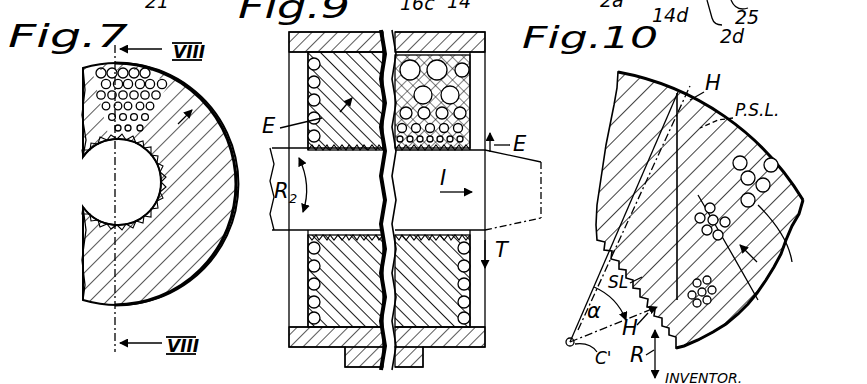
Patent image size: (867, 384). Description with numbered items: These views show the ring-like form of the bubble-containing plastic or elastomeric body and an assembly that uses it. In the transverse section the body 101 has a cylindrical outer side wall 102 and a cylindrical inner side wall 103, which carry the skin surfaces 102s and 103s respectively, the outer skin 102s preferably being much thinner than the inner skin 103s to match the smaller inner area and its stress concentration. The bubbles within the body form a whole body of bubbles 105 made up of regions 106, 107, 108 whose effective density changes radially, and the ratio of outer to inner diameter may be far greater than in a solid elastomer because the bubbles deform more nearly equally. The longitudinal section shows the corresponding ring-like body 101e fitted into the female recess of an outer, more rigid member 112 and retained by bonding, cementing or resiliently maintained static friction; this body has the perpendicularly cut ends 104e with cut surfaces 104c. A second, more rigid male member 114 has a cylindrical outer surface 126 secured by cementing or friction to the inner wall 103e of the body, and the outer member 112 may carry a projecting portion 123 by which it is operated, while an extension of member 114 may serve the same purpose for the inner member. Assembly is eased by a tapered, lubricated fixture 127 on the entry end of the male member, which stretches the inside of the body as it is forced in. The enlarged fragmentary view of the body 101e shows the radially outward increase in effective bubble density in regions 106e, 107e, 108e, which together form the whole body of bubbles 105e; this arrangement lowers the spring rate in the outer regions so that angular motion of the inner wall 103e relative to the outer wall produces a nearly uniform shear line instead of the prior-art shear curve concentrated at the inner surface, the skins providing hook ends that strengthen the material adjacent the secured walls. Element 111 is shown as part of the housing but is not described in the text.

In FIG. 7, the plastic or elastomeric body 101 is at (90, 305).
In FIG. 7, the outer side wall 102 is at (100, 310).
In FIG. 7, the outer skin surface 102s is at (206, 108).
In FIG. 9, the outer skin surface 102s is at (345, 58).
In FIG. 10, the outer skin surface 102s is at (745, 140).
In FIG. 7, the inner side wall 103 is at (92, 212).
In FIG. 7, the inner skin surface 103s is at (103, 150).
In FIG. 9, the inner skin surface 103s is at (335, 233).
In FIG. 7, the whole body of bubbles 105 is at (198, 110).
In FIG. 7, the bubble region 106 is at (114, 128).
In FIG. 7, the bubble region 107 is at (108, 108).
In FIG. 7, the bubble region 108 is at (94, 80).
In FIG. 9, the ring-like body 101e is at (306, 70).
In FIG. 10, the ring-like body 101e is at (712, 112).
In FIG. 9, the inner wall 103e is at (352, 140).
In FIG. 9, the cut end 104e is at (308, 287).
In FIG. 9, the cut surface 104c is at (462, 294).
In FIG. 9, the whole body of bubbles 105e is at (437, 60).
In FIG. 10, the whole body of bubbles 105e is at (750, 292).
In FIG. 9, the bubble region 106e is at (466, 136).
In FIG. 10, the bubble region 106e is at (722, 330).
In FIG. 9, the bubble region 107e is at (458, 108).
In FIG. 10, the bubble region 107e is at (748, 308).
In FIG. 9, the bubble region 108e is at (444, 74).
In FIG. 10, the bubble region 108e is at (786, 238).
In FIG. 9, the housing wall 111 is at (300, 321).
In FIG. 9, the outer member 112 is at (310, 345).
In FIG. 9, the male member 114 is at (282, 238).
In FIG. 9, the projecting portion 123 is at (425, 362).
In FIG. 9, the cylindrical outer surface 126 is at (437, 243).
In FIG. 9, the tapered fixture 127 is at (521, 228).